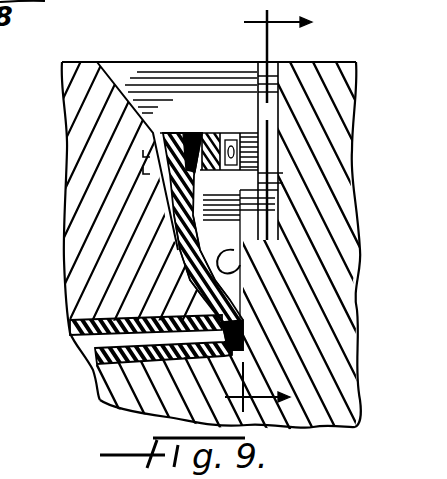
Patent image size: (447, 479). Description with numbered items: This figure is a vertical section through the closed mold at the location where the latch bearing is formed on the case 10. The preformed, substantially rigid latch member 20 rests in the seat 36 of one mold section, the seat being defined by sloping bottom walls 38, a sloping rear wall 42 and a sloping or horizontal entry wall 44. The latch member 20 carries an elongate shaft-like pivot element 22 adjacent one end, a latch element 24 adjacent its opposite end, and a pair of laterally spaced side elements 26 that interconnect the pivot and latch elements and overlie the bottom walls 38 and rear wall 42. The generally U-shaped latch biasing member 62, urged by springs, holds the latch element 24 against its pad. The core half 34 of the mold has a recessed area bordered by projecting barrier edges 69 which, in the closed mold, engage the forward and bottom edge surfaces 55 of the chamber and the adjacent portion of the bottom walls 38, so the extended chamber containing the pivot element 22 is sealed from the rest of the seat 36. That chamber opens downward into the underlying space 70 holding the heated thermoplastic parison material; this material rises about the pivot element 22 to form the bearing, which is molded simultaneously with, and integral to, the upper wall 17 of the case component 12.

The case 10 is at (247, 211).
The case component 12 is at (120, 380).
The upper wall 17 is at (97, 320).
The latch member 20 is at (170, 181).
The pivot element 22 is at (62, 116).
The latch element 24 is at (165, 134).
The side elements 26 is at (230, 245).
The core half of mold 34 is at (347, 64).
The seat 36 is at (183, 66).
The bottom walls 38 is at (196, 274).
The rear wall 42 is at (205, 215).
The entry wall 44 is at (128, 72).
The barrier edge surfaces 55 is at (243, 318).
The latch biasing member 62 is at (217, 133).
The barrier edges 69 is at (243, 250).
The space 70 is at (97, 345).